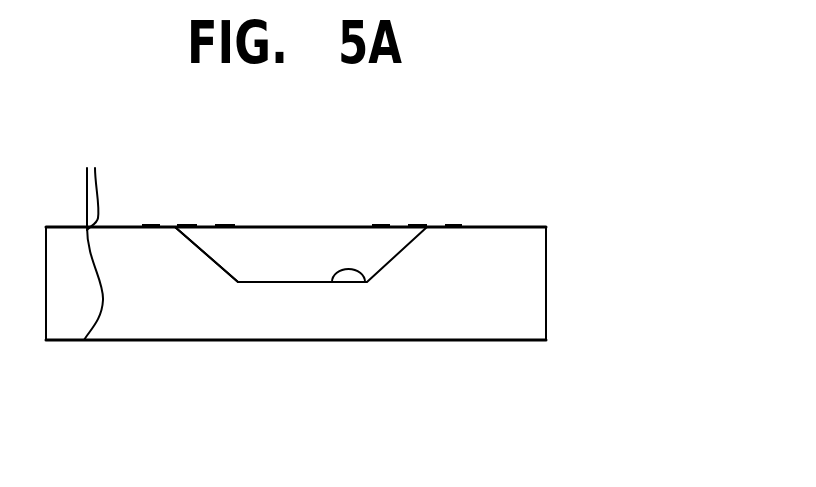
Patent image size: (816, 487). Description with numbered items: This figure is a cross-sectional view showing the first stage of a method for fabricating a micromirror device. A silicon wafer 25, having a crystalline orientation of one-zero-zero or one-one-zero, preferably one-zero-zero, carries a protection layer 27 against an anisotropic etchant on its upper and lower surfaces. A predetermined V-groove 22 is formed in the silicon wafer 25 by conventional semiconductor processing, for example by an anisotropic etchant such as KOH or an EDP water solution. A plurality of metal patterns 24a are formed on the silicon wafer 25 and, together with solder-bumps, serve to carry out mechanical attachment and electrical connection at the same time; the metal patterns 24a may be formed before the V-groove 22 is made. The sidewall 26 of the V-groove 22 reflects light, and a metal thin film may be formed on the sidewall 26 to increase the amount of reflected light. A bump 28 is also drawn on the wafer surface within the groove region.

The V-groove 22 is at (329, 262).
The metal patterns 24a is at (450, 226).
The silicon wafer 25 is at (521, 291).
The sidewall 26 is at (223, 253).
The protection layer 27 is at (96, 232).
The bump 28 is at (333, 282).